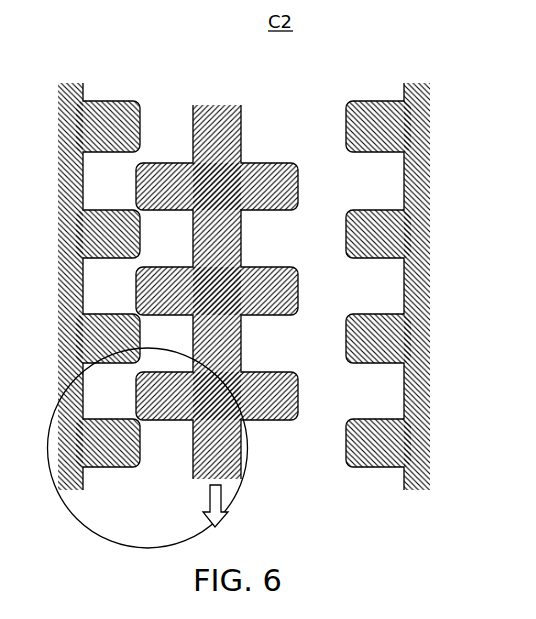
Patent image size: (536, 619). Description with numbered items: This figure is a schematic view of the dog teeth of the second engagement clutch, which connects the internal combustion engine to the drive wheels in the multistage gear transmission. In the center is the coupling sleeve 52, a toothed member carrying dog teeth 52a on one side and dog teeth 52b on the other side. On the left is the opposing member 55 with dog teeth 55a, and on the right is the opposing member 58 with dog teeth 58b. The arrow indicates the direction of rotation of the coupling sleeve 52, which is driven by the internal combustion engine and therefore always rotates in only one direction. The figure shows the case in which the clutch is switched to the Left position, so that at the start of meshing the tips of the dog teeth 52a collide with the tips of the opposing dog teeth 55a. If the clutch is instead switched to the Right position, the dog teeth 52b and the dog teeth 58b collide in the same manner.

The dog clutch ring 55 is at (97, 76).
The dog teeth 55a is at (148, 448).
The coupling sleeve 52 is at (227, 90).
The dog teeth 52a is at (170, 134).
The dog teeth 52b is at (254, 484).
The dog clutch ring 58 is at (389, 78).
The dog teeth 58b is at (350, 507).